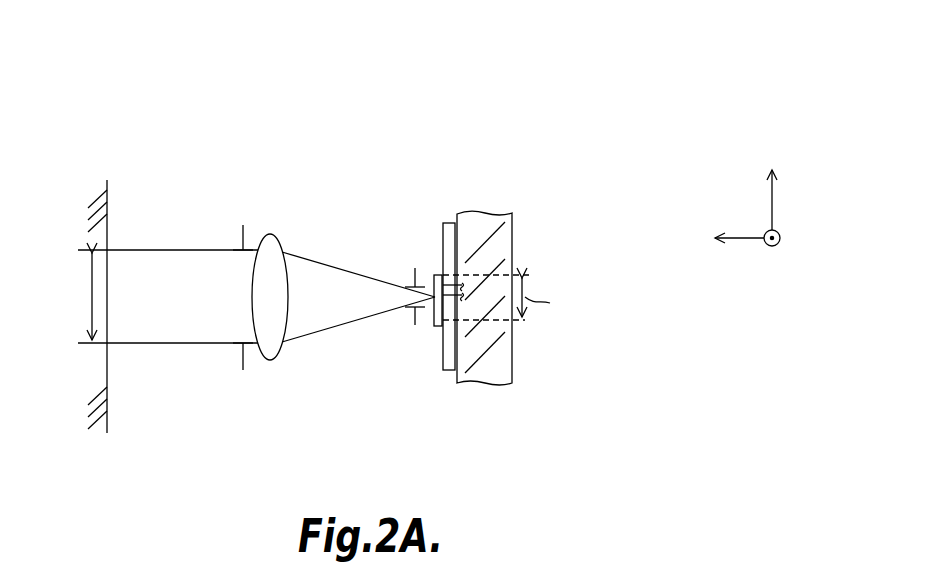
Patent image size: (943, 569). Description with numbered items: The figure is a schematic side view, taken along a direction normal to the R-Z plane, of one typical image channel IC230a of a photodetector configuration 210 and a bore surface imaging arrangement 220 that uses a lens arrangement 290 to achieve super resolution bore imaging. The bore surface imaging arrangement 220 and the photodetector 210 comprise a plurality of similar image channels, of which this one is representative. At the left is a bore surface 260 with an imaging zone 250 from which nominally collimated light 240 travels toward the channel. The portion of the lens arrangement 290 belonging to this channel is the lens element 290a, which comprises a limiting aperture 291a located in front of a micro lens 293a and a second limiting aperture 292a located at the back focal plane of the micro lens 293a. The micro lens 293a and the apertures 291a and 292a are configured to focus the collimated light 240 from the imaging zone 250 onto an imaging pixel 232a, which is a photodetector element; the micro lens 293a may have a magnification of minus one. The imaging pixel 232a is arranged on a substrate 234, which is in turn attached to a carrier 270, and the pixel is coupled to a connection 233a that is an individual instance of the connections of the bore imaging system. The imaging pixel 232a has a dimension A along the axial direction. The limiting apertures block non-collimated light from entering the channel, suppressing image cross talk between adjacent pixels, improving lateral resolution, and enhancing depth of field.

The bore surface imaging arrangement 220 is at (342, 102).
The lens arrangement 290 is at (411, 292).
The image channel IC230a is at (540, 433).
The photodetector configuration 210 is at (502, 253).
The substrate 234 is at (450, 223).
The carrier 270 is at (480, 213).
The connection 233a is at (447, 283).
The imaging pixel 232a is at (434, 327).
The limiting aperture 292a is at (415, 325).
The micro lens 293a is at (272, 360).
The limiting aperture 291a is at (243, 370).
The lens element 290a is at (329, 359).
The collimated light 240 is at (188, 313).
The imaging zone 250 is at (92, 296).
The bore surface 260 is at (107, 193).